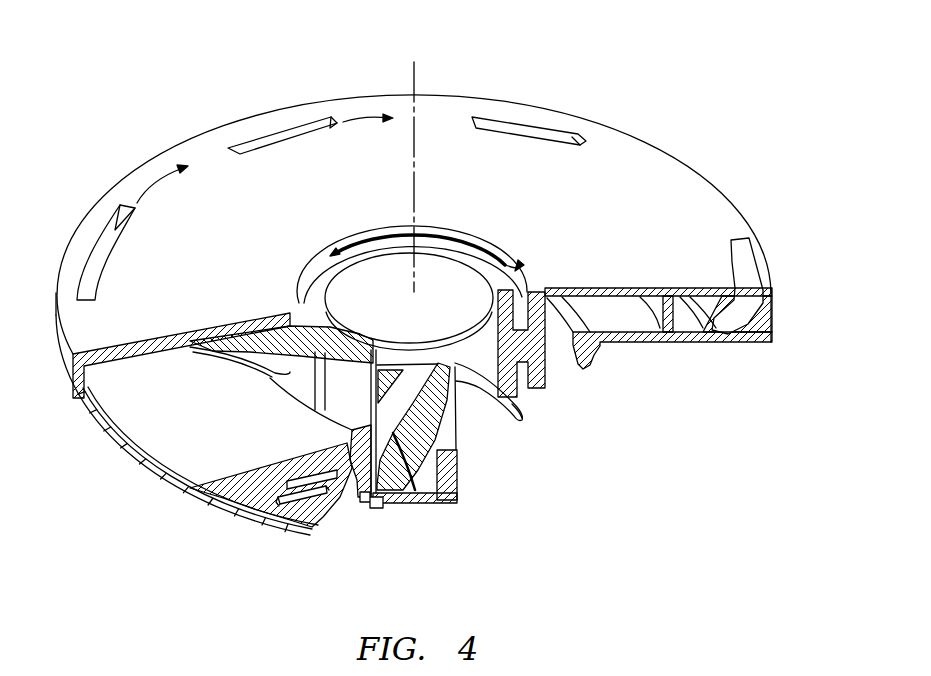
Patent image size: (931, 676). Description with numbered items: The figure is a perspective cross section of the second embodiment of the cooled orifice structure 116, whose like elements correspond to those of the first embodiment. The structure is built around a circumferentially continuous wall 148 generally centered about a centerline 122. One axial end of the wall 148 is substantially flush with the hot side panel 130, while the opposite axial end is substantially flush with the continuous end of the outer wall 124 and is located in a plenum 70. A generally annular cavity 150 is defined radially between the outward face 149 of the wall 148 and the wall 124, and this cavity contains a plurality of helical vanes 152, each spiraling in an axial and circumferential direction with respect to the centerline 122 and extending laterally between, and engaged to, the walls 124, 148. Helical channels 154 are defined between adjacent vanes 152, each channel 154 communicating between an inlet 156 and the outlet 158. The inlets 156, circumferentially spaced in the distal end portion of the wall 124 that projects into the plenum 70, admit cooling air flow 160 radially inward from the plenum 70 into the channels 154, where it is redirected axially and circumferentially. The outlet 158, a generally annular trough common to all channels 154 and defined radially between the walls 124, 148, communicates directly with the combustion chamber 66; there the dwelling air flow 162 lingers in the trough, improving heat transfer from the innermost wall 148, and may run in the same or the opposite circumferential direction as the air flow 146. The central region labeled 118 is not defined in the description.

The orifice structure 116 is at (673, 85).
The combustion chamber 66 is at (238, 64).
The centerline 122 is at (416, 78).
The hot side panel 130 is at (712, 207).
The outlet 158 is at (541, 292).
The wall 124 is at (543, 367).
The air flow 146 is at (150, 186).
The dwelling air flow 162 is at (346, 248).
The annular cavity 150 is at (516, 268).
The central opening 118 is at (462, 295).
The helical channel 154 is at (413, 373).
The helical vane 152 is at (401, 462).
The circumferentially continuous wall 148 is at (484, 380).
The outward face 149 is at (521, 412).
The cooling air flow 160 is at (360, 507).
The inlet 156 is at (367, 501).
The plenum 70 is at (540, 552).